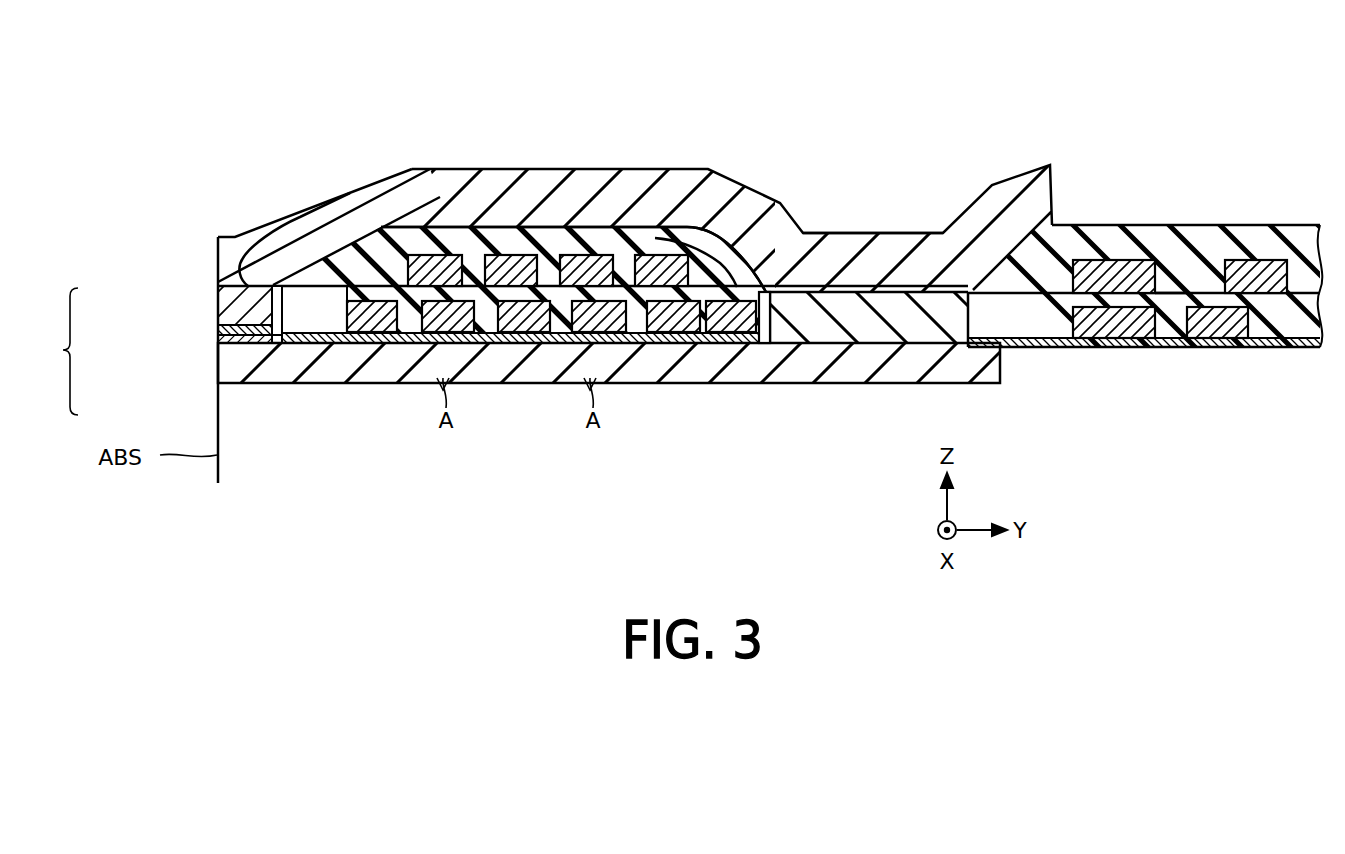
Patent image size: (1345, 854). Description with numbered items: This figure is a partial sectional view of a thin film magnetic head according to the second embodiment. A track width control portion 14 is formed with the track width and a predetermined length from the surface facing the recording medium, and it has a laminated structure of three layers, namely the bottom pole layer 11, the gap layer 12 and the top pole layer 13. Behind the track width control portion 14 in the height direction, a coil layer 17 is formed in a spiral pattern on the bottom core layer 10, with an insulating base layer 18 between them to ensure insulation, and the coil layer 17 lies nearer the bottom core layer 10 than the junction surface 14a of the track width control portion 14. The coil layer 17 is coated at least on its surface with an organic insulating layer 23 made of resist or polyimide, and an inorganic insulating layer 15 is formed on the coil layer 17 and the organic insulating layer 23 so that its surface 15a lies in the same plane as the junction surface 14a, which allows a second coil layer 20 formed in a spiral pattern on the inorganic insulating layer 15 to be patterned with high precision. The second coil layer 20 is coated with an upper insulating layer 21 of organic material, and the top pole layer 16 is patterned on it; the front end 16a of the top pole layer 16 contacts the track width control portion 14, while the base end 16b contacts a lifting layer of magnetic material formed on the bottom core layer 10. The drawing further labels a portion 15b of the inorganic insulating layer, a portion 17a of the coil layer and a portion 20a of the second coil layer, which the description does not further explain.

The bottom core layer 10 is at (890, 366).
The bottom pole layer 11 is at (217, 336).
The gap layer 12 is at (217, 328).
The top pole layer 13 is at (217, 289).
The track width control portion 14 is at (52, 351).
The junction surface 14a is at (270, 223).
The inorganic insulating layer 15 is at (763, 345).
The surface of the inorganic insulating layer 15a is at (363, 285).
The rear portion of insulating layer 15b is at (1125, 278).
The top pole layer 16 is at (645, 205).
The front end 16a is at (232, 257).
The base end 16b is at (865, 262).
The coil layer 17 is at (528, 350).
The coil lead portion 17a is at (1100, 303).
The insulating base layer 18 is at (748, 345).
The second coil layer 20 is at (538, 230).
The rear insulating film 20a is at (1137, 282).
The upper insulating layer 21 is at (718, 250).
The organic insulating layer 23 is at (300, 320).